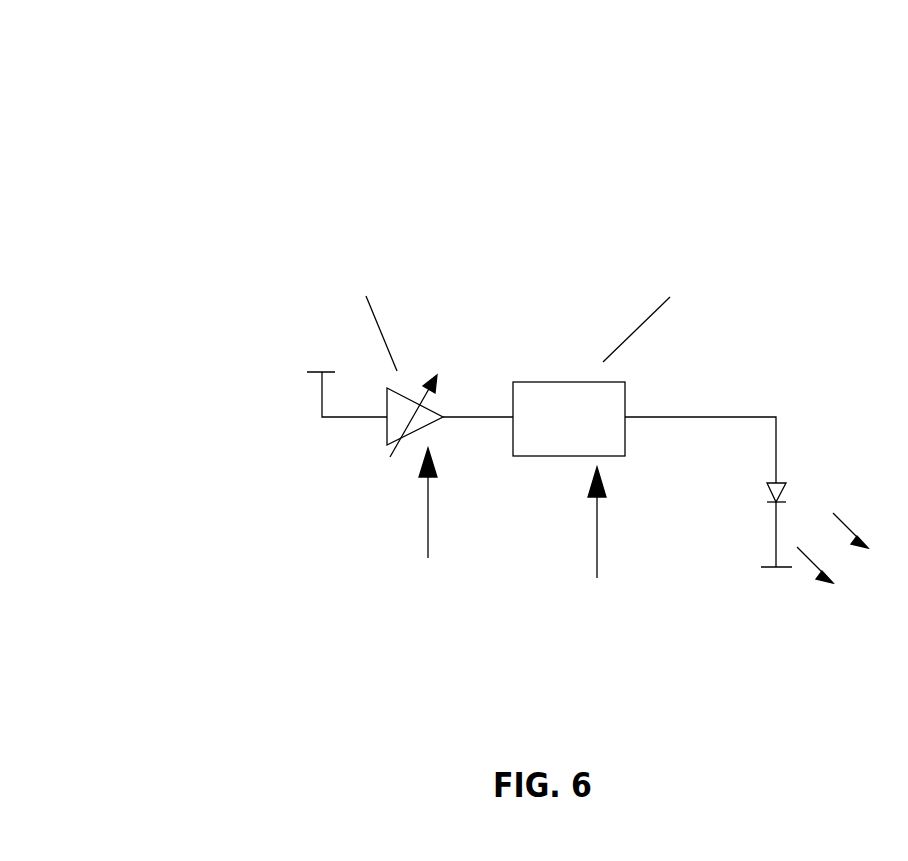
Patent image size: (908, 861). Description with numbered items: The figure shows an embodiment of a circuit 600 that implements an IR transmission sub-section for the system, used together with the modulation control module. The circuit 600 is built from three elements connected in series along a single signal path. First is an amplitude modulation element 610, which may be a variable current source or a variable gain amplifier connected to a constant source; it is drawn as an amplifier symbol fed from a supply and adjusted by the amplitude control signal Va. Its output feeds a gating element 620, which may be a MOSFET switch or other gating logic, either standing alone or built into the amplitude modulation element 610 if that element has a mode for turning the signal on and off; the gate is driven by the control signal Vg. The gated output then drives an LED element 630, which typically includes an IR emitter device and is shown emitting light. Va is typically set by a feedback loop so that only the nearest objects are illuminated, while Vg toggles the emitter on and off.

The circuit 600 is at (88, 89).
The amplitude modulation element 610 is at (386, 428).
The gating element 620 is at (560, 456).
The LED element 630 is at (757, 495).